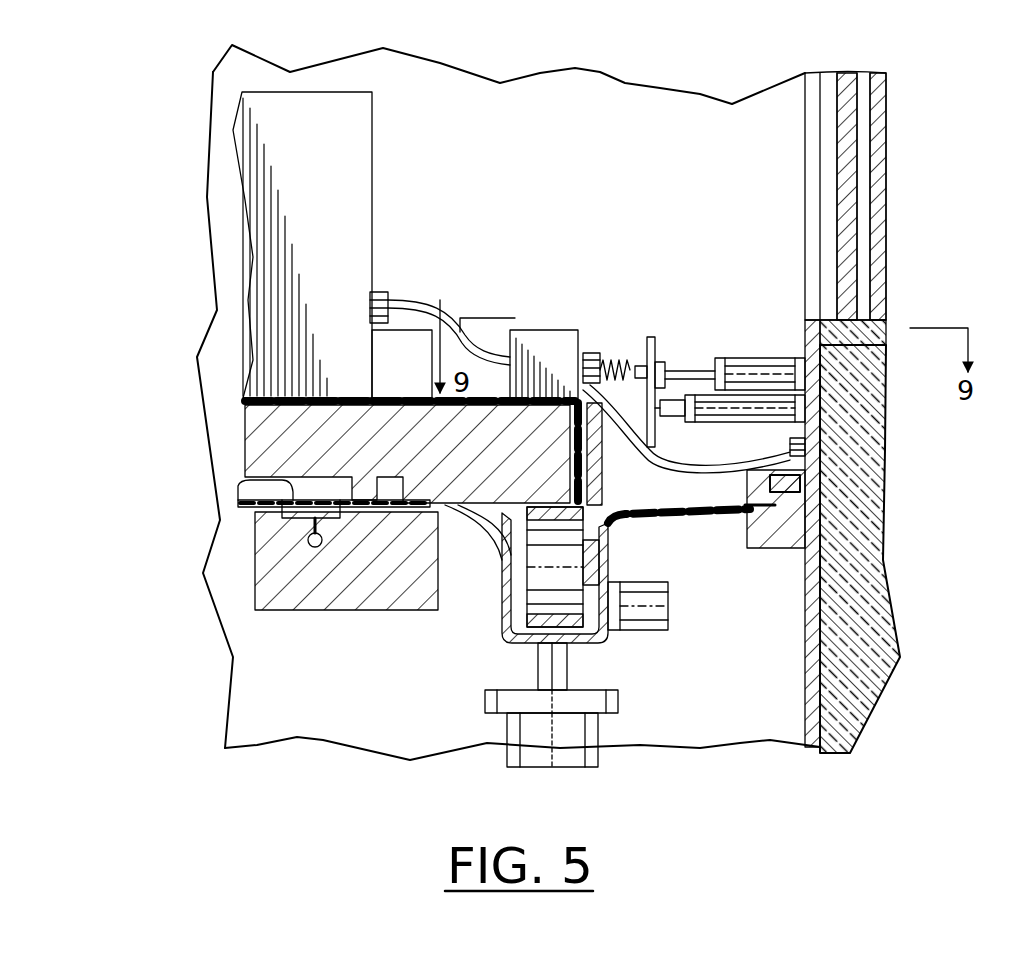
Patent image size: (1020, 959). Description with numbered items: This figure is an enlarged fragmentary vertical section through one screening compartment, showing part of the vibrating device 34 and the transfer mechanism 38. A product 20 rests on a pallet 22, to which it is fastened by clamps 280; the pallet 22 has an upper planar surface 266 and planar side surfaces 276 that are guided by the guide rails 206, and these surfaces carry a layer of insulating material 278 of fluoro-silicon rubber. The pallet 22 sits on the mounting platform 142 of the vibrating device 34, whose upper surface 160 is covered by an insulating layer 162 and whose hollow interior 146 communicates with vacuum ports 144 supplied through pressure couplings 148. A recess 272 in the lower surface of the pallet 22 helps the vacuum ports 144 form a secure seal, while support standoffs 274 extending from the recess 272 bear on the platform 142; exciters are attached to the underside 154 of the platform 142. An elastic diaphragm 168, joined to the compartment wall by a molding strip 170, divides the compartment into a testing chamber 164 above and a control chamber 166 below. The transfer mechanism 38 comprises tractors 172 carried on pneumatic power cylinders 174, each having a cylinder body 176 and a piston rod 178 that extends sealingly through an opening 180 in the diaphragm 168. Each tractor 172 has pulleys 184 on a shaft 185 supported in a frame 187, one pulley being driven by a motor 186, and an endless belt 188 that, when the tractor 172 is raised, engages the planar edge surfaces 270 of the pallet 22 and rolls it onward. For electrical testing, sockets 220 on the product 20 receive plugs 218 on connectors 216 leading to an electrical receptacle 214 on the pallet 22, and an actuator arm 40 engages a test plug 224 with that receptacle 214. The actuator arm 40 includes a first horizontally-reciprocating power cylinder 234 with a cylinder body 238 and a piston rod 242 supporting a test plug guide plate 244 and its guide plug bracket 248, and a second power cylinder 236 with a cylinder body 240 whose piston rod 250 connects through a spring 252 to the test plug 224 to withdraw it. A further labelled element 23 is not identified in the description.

The product 20 is at (228, 111).
The pallet 22 is at (236, 416).
The wall strip 23 is at (806, 462).
The vibrating device 34 is at (512, 510).
The transfer mechanism 38 is at (628, 550).
The actuator arm 40 is at (797, 335).
The mounting platform 142 is at (253, 590).
The vacuum ports 144 is at (262, 501).
The hollow interior 146 is at (308, 532).
The pressure couplings 148 is at (307, 545).
The underside 154 is at (340, 612).
The upper surface 160 is at (262, 470).
The insulating layer 162 is at (280, 510).
The testing chamber 164 is at (502, 128).
The control chamber 166 is at (266, 638).
The diaphragm 168 is at (660, 520).
The molding strip 170 is at (825, 579).
The tractors 172 is at (505, 560).
The pneumatic power cylinders 174 is at (612, 748).
The cylinder body 176 is at (618, 710).
The piston rod 178 is at (568, 665).
The openings 180 is at (532, 692).
The pulleys 184 is at (518, 640).
The shaft 185 is at (606, 572).
The motor 186 is at (668, 606).
The frame 187 is at (602, 640).
The endless belt 188 is at (538, 662).
The guide rails 206 is at (668, 470).
The electrical receptacle 214 is at (545, 330).
The electrical connectors 216 is at (395, 300).
The plugs 218 is at (379, 292).
The electrical sockets 220 is at (383, 290).
The test plug 224 is at (593, 352).
The first horizontally-reciprocating power cylinder 234 is at (755, 356).
The second horizontally-reciprocating power cylinder 236 is at (690, 394).
The cylinder body 238 is at (786, 346).
The cylinder body 240 is at (807, 436).
The piston rod 242 is at (722, 352).
The test plug guide plate 244 is at (635, 365).
The guide plug bracket 248 is at (650, 338).
The piston rod 250 is at (657, 418).
The spring 252 is at (605, 358).
The upper planar surface 266 is at (460, 318).
The planar edge surfaces 270 is at (533, 328).
The recess 272 is at (258, 485).
The support standoffs 274 is at (280, 438).
The planar side surfaces 276 is at (603, 490).
The layer of insulating material 278 is at (258, 400).
The clamps 280 is at (440, 302).